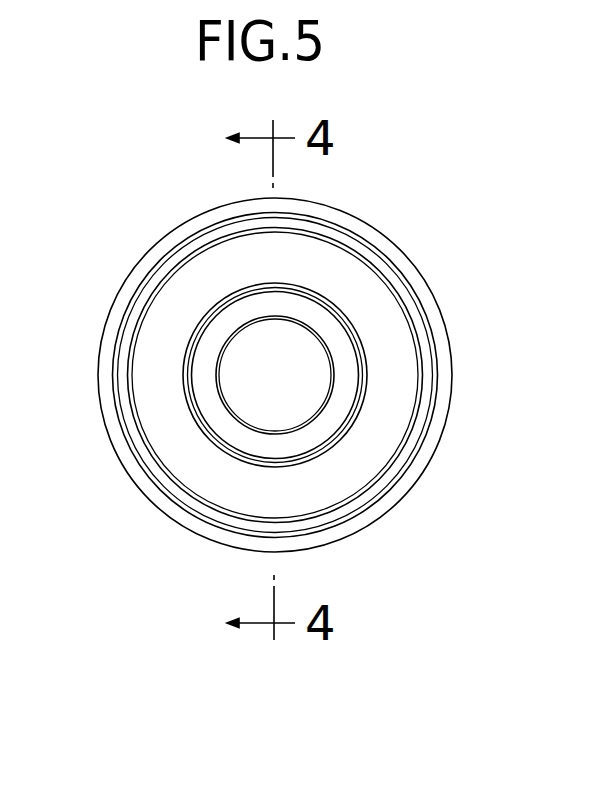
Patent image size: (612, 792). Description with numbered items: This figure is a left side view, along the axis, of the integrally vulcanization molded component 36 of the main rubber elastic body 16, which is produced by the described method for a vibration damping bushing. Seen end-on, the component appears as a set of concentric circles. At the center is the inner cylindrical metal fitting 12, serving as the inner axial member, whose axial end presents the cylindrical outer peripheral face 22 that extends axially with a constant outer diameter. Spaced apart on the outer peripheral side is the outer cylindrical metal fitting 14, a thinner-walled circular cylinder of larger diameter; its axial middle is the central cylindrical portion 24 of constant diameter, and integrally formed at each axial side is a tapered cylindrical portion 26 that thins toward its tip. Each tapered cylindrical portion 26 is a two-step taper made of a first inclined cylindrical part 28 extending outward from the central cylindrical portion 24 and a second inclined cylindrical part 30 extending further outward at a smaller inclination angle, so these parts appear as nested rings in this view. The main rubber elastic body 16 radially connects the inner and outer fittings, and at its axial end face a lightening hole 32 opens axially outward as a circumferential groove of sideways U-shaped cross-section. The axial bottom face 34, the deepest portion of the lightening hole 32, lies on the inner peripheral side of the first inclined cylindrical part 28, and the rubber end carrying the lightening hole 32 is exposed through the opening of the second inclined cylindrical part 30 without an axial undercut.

The inner cylindrical metal fitting 12 is at (372, 348).
The outer cylindrical metal fitting 14 is at (110, 456).
The main rubber elastic body 16 is at (189, 246).
The cylindrical outer peripheral face 22 is at (313, 445).
The central cylindrical portion 24 is at (123, 302).
The tapered cylindrical portion 26 is at (501, 505).
The first inclined cylindrical part 28 is at (428, 425).
The second inclined cylindrical part 30 is at (415, 443).
The lightening hole 32 is at (317, 242).
The axial bottom face 34 is at (234, 506).
The integrally vulcanization molded component 36 is at (437, 193).